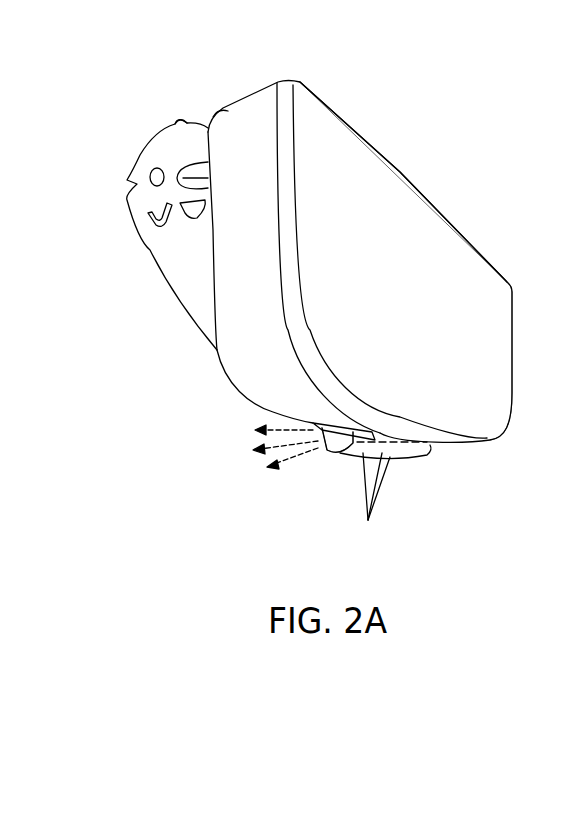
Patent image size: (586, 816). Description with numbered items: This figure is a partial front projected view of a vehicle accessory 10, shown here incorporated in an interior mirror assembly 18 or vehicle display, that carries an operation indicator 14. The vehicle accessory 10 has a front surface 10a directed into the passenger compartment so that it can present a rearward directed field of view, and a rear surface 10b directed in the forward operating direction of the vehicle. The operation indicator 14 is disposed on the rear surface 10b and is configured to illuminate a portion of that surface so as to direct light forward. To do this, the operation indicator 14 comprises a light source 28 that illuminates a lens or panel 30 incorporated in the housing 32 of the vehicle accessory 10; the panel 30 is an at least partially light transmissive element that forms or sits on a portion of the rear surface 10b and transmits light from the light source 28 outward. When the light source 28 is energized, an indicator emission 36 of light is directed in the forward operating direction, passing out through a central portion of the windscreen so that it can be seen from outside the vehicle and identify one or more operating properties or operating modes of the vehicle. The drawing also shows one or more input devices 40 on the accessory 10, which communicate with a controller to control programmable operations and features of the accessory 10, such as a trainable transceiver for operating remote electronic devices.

The vehicle accessory 10 is at (450, 153).
The interior mirror assembly 18 is at (403, 182).
The front surface 10a is at (393, 287).
The rear surface 10b is at (250, 385).
The housing 32 is at (262, 120).
The operation indicator 14 is at (340, 441).
The panel 30 is at (337, 440).
The light source 28 is at (427, 450).
The indicator emission 36 is at (265, 457).
The input devices 40 is at (368, 520).